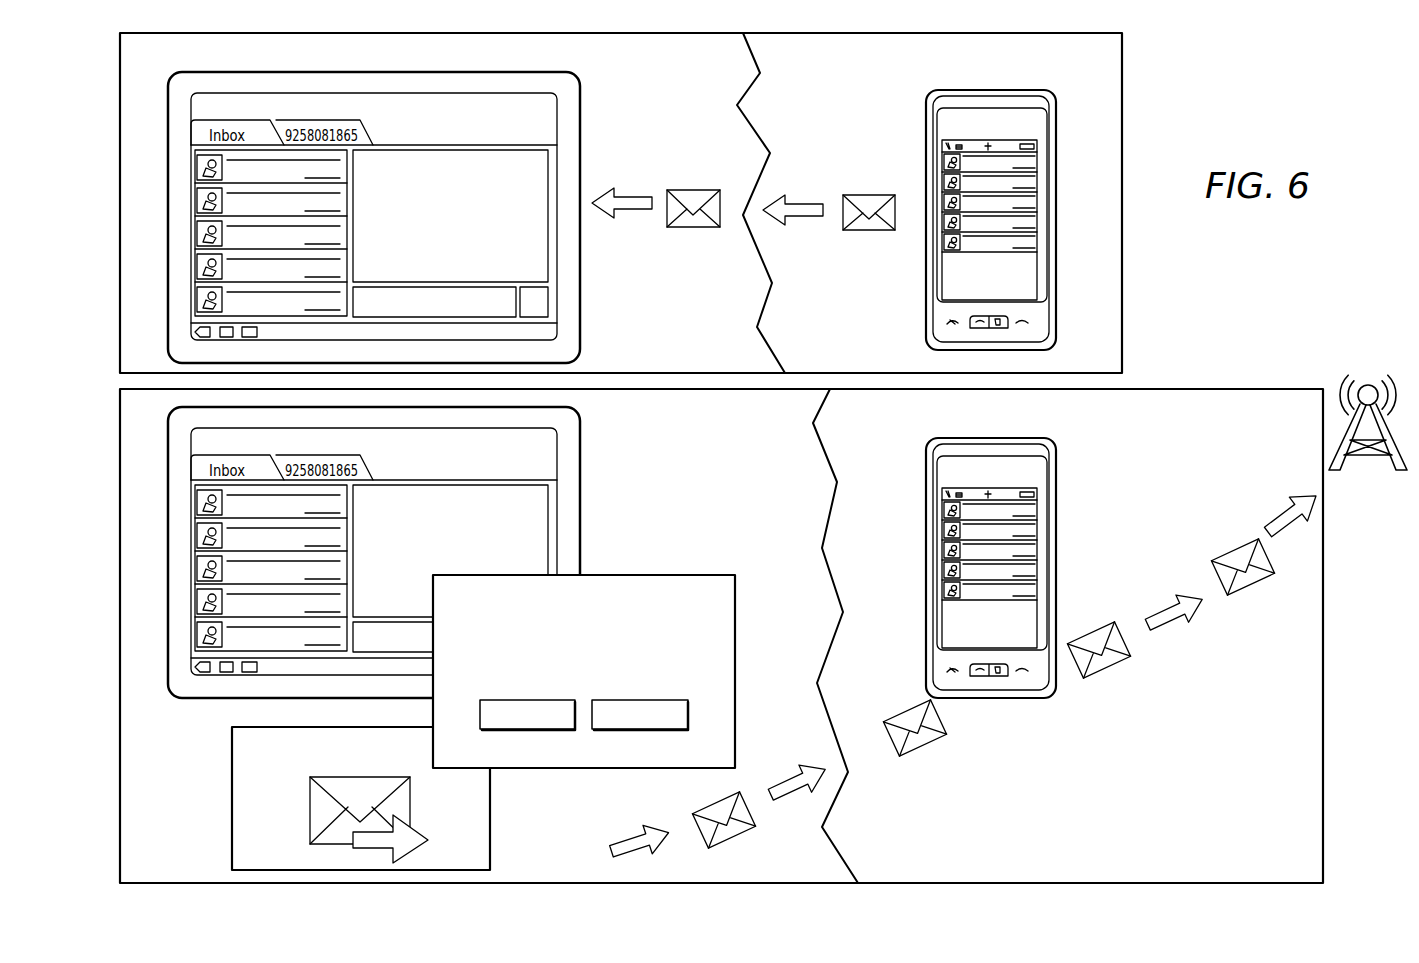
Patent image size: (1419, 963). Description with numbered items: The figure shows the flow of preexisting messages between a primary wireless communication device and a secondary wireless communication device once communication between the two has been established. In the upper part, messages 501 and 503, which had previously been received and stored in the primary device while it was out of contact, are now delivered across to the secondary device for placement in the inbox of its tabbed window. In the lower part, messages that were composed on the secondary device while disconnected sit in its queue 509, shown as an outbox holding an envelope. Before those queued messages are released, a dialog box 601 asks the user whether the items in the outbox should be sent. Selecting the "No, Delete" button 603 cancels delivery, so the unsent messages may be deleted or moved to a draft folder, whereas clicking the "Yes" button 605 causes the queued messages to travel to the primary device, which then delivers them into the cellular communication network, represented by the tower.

The message 501 is at (677, 189).
The message 503 is at (855, 195).
The queue 509 is at (490, 818).
The dialog box 601 is at (584, 669).
The "No, Delete" button 603 is at (617, 730).
The "Yes" button 605 is at (502, 730).